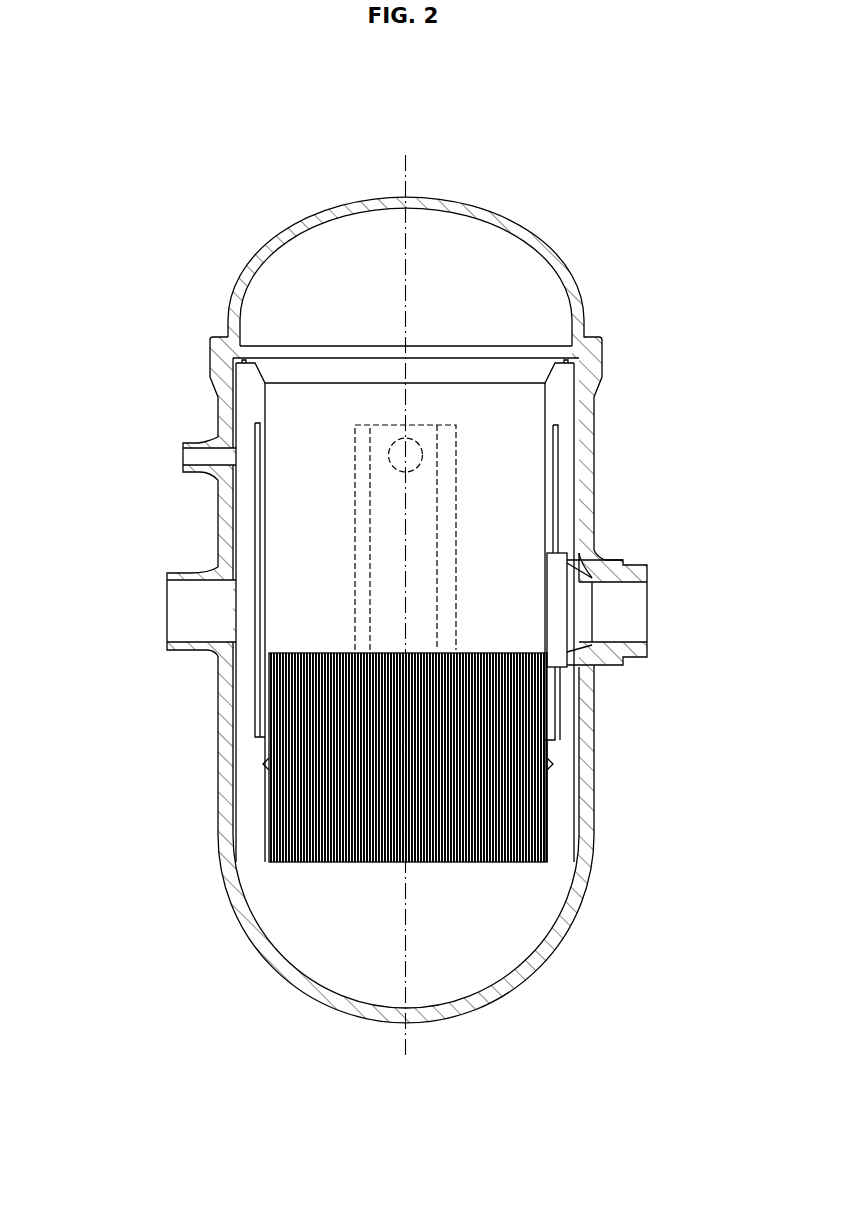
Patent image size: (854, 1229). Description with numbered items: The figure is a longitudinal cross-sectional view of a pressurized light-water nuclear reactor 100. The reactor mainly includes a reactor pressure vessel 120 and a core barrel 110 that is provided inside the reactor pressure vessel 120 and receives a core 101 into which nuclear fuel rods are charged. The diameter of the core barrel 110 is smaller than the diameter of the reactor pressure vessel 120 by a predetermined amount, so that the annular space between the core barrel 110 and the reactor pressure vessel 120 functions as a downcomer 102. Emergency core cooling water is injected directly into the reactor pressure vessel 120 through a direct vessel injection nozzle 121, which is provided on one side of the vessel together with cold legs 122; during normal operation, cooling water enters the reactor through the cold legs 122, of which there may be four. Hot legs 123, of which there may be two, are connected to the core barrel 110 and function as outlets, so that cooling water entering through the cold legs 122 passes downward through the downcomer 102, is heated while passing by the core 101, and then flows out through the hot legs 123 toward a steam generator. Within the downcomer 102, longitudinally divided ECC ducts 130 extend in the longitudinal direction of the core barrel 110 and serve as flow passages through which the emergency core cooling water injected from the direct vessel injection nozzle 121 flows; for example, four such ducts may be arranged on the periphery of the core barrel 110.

The pressurized light-water nuclear reactor 100 is at (436, 90).
The core 101 is at (527, 742).
The downcomer 102 is at (560, 783).
The core barrel 110 is at (547, 820).
The reactor pressure vessel 120 is at (595, 863).
The direct vessel injection nozzle 121 is at (197, 443).
The cold leg 122 is at (167, 602).
The hot leg 123 is at (648, 607).
The longitudinally divided ECC duct 130 is at (258, 672).